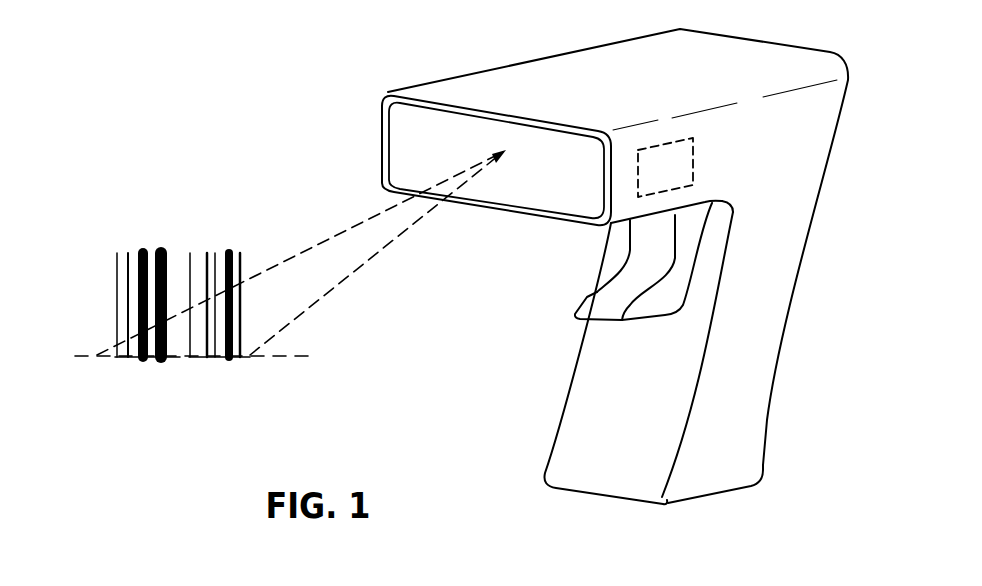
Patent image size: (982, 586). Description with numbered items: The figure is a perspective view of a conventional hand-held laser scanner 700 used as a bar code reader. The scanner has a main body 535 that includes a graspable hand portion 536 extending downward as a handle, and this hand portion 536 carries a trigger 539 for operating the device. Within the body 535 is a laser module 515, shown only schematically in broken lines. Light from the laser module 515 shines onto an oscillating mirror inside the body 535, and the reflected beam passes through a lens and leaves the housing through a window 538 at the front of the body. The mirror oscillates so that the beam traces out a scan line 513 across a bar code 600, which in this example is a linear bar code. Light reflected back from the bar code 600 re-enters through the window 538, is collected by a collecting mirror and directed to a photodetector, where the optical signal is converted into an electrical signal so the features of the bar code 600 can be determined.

The hand-held laser scanner 700 is at (258, 63).
The main body 535 is at (806, 145).
The graspable hand portion 536 is at (608, 470).
The window 538 is at (397, 139).
The trigger 539 is at (590, 301).
The laser module 515 is at (667, 170).
The scan line 513 is at (280, 357).
The bar code 600 is at (100, 254).